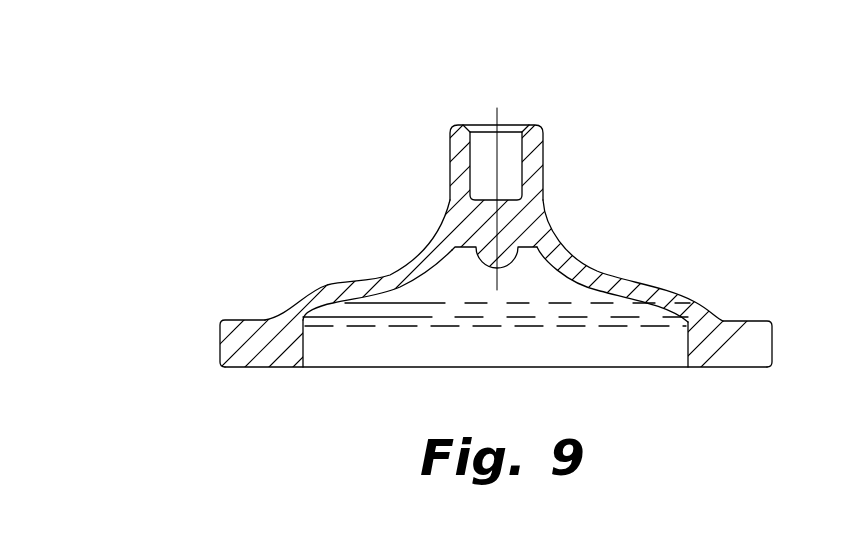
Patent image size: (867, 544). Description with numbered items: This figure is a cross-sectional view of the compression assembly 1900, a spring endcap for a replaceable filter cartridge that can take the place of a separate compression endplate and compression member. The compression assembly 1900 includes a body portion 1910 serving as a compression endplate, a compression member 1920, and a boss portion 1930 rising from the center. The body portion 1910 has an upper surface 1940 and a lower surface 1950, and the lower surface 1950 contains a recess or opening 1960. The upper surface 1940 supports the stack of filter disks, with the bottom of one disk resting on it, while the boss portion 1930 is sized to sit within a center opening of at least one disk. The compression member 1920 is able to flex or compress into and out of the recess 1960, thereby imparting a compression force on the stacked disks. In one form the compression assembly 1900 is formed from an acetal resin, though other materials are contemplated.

The compression assembly 1900 is at (560, 92).
The body portion 1910 is at (192, 341).
The compression member 1920 is at (613, 265).
The boss portion 1930 is at (566, 158).
The upper surface 1940 is at (348, 283).
The lower surface 1950 is at (259, 367).
The recess 1960 is at (482, 345).